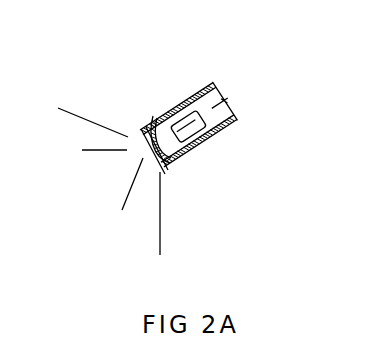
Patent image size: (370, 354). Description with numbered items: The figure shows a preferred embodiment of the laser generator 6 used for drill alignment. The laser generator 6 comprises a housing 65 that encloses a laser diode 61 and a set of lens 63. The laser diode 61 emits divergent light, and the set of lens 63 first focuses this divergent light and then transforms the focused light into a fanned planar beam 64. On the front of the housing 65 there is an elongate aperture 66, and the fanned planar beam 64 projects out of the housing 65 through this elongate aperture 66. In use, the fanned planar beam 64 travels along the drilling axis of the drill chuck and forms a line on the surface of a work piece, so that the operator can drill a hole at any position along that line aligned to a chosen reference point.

The laser generator 6 is at (217, 61).
The laser diode 61 is at (193, 137).
The set of lens 63 is at (168, 170).
The fanned planar beam 64 is at (97, 121).
The housing 65 is at (161, 114).
The elongate aperture 66 is at (152, 168).